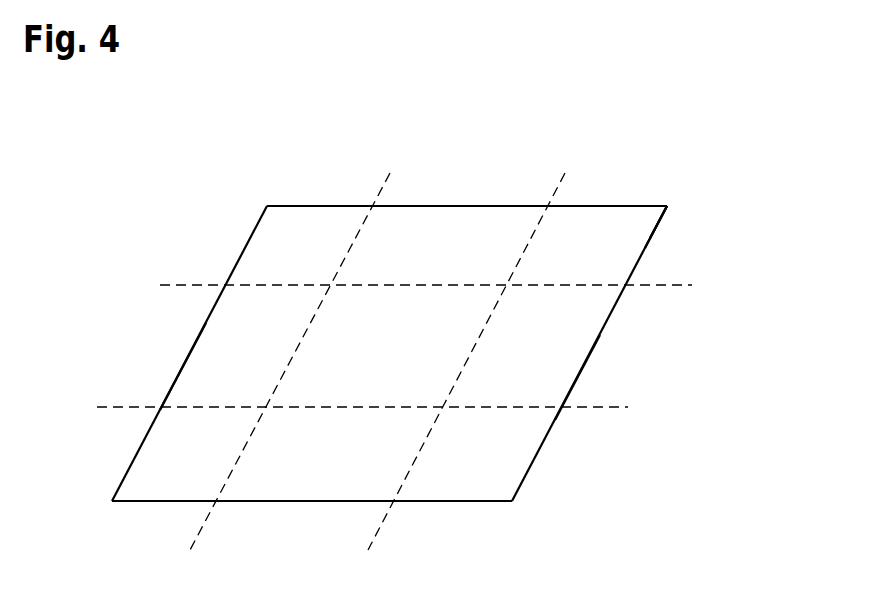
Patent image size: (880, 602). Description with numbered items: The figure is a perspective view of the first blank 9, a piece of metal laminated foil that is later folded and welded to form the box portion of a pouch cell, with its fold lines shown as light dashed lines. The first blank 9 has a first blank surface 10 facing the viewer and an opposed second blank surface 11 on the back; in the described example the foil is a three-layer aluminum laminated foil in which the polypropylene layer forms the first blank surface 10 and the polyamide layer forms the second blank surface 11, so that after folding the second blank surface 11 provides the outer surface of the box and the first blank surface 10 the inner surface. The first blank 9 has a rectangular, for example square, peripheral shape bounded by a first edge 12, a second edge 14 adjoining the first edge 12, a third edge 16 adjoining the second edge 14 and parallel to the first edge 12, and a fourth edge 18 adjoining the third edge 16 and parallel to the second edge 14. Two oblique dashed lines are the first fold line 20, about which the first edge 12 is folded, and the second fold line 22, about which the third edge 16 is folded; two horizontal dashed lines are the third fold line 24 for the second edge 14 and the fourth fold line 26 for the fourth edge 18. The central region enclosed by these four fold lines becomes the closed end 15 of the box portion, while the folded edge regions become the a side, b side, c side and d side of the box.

The first blank 9 is at (174, 181).
The first blank surface 10 is at (633, 222).
The second blank surface 11 is at (659, 221).
The first edge 12 is at (600, 335).
The second edge 14 is at (313, 207).
The closed end 15 is at (403, 353).
The third edge 16 is at (204, 323).
The fourth edge 18 is at (252, 501).
The first fold line 20 is at (565, 174).
The second fold line 22 is at (390, 174).
The third fold line 24 is at (657, 285).
The fourth fold line 26 is at (593, 408).
The a side a is at (550, 373).
The b side b is at (503, 222).
The c side c is at (200, 372).
The d side d is at (330, 480).